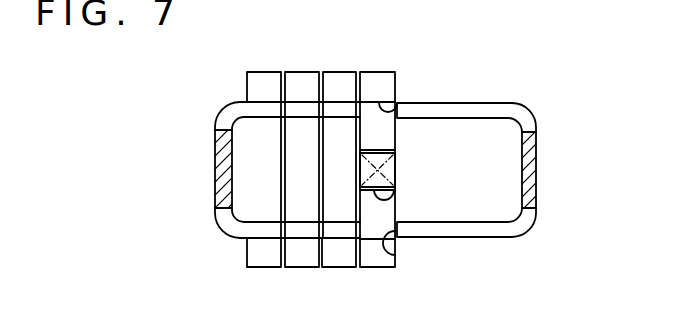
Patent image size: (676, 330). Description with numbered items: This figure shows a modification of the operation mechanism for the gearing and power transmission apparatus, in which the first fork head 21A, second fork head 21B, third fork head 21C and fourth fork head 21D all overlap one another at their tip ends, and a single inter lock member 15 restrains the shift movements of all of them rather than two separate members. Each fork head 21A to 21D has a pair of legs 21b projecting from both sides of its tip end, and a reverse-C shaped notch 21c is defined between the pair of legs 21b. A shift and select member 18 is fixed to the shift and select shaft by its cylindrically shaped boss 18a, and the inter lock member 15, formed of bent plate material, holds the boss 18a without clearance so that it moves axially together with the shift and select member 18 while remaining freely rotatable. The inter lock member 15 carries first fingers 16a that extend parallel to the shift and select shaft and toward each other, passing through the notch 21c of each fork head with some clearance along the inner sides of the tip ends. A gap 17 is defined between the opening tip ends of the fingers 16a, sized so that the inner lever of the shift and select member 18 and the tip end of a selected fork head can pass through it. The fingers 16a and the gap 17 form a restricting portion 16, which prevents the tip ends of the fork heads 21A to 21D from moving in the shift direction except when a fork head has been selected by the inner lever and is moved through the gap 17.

The inter lock member 15 is at (377, 171).
The restricting portion 16 is at (341, 90).
The first fingers 16a is at (295, 108).
The gap 17 is at (393, 252).
The shift and select member 18 is at (380, 170).
The boss 18a is at (398, 201).
The first fork head 21A is at (381, 271).
The second fork head 21B is at (343, 271).
The third fork head 21C is at (300, 276).
The fourth fork head 21D is at (258, 276).
The legs 21b is at (258, 82).
The notch 21c is at (397, 108).